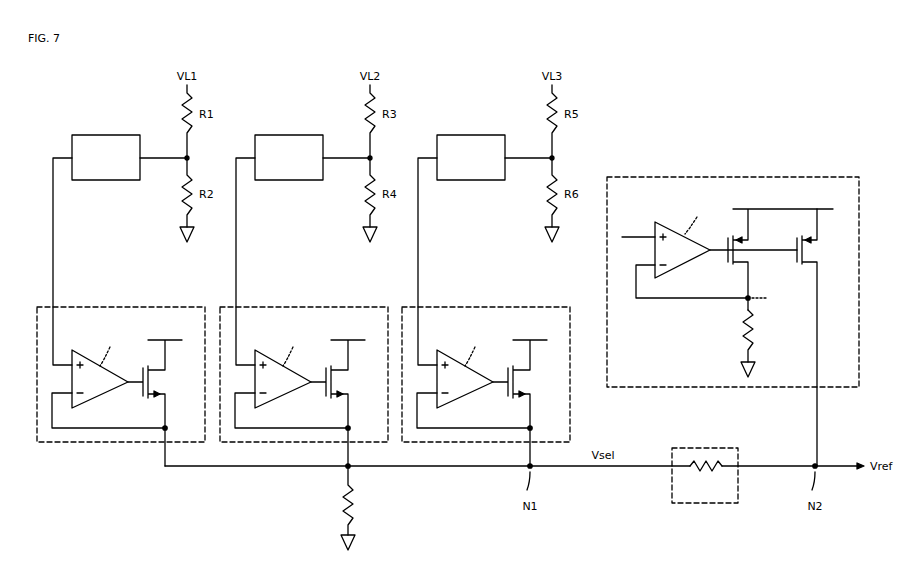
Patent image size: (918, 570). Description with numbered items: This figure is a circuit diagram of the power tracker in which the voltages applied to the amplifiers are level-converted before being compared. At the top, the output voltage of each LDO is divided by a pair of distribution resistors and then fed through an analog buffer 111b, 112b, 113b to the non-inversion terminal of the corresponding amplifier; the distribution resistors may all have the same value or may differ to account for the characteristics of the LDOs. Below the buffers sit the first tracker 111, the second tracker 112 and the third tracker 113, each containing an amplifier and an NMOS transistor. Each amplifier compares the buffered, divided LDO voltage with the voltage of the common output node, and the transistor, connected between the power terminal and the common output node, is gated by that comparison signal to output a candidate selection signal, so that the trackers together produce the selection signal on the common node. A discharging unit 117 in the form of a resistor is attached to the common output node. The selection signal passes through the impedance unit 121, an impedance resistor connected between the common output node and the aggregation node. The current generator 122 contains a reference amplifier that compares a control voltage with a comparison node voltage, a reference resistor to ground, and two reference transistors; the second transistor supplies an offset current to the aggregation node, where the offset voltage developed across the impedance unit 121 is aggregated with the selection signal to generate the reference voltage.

The analog buffer 111b is at (122, 135).
The analog buffer 112b is at (301, 150).
The analog buffer 113b is at (483, 150).
The first tracker 111 is at (165, 307).
The second tracker 112 is at (304, 375).
The third tracker 113 is at (486, 375).
The discharging unit 117 is at (362, 503).
The impedance unit 121 is at (718, 448).
The current generator 122 is at (827, 177).